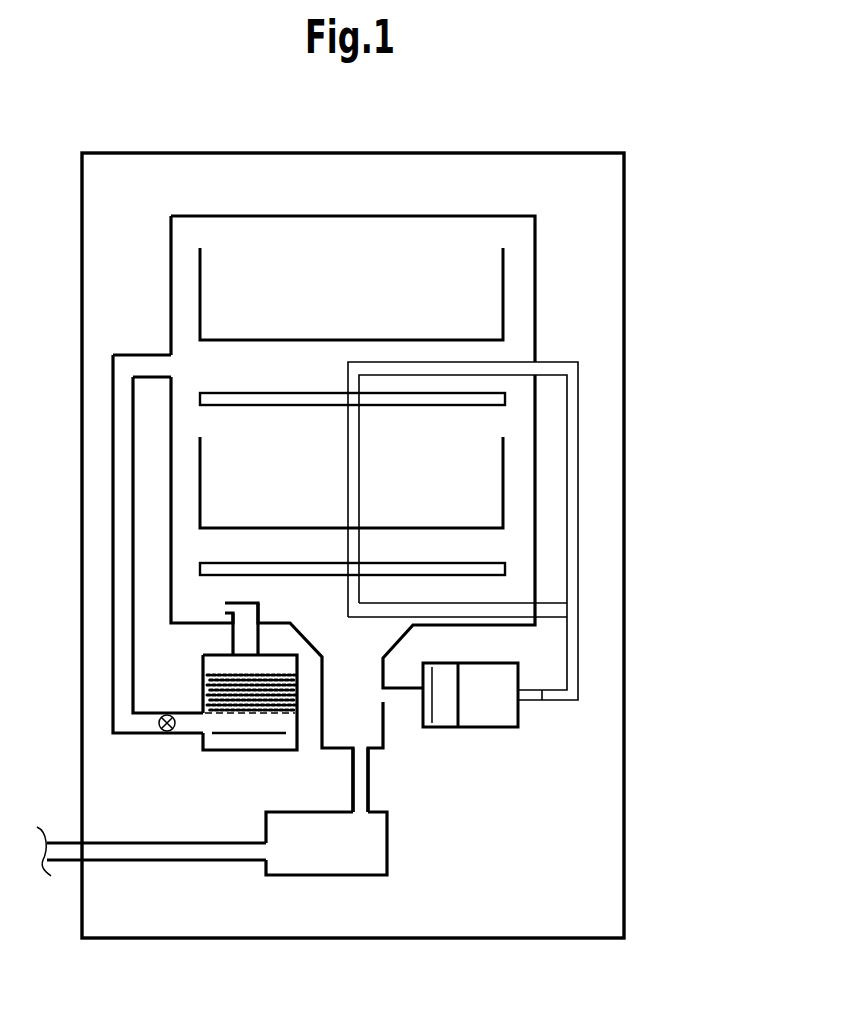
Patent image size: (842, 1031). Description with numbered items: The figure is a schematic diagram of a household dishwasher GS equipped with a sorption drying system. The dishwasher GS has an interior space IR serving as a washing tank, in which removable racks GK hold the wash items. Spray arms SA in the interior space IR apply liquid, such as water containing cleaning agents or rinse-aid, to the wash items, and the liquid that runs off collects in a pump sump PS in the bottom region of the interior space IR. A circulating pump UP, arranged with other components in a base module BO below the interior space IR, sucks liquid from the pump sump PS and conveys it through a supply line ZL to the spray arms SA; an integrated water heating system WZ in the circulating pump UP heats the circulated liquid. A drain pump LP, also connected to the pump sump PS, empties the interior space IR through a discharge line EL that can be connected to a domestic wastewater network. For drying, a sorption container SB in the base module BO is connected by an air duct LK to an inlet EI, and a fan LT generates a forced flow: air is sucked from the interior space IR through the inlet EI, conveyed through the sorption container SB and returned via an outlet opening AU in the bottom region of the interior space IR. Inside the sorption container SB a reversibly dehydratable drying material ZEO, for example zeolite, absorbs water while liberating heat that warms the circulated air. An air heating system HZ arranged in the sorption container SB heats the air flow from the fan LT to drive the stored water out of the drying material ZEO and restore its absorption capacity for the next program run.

The dishwasher GS is at (625, 295).
The base module BO is at (634, 701).
The interior space IR is at (537, 239).
The racks GK is at (351, 388).
The spray arms SA is at (251, 400).
The supply line ZL is at (553, 368).
The air duct LK is at (138, 353).
The inlet EI is at (171, 366).
The outlet opening AU is at (223, 610).
The drying material ZEO is at (215, 686).
The fan LT is at (160, 737).
The sorption container SB is at (212, 750).
The air heating system HZ is at (252, 736).
The pump sump PS is at (387, 737).
The water heating system WZ is at (450, 715).
The circulating pump UP is at (502, 717).
The drain pump LP is at (390, 847).
The discharge line EL is at (137, 852).